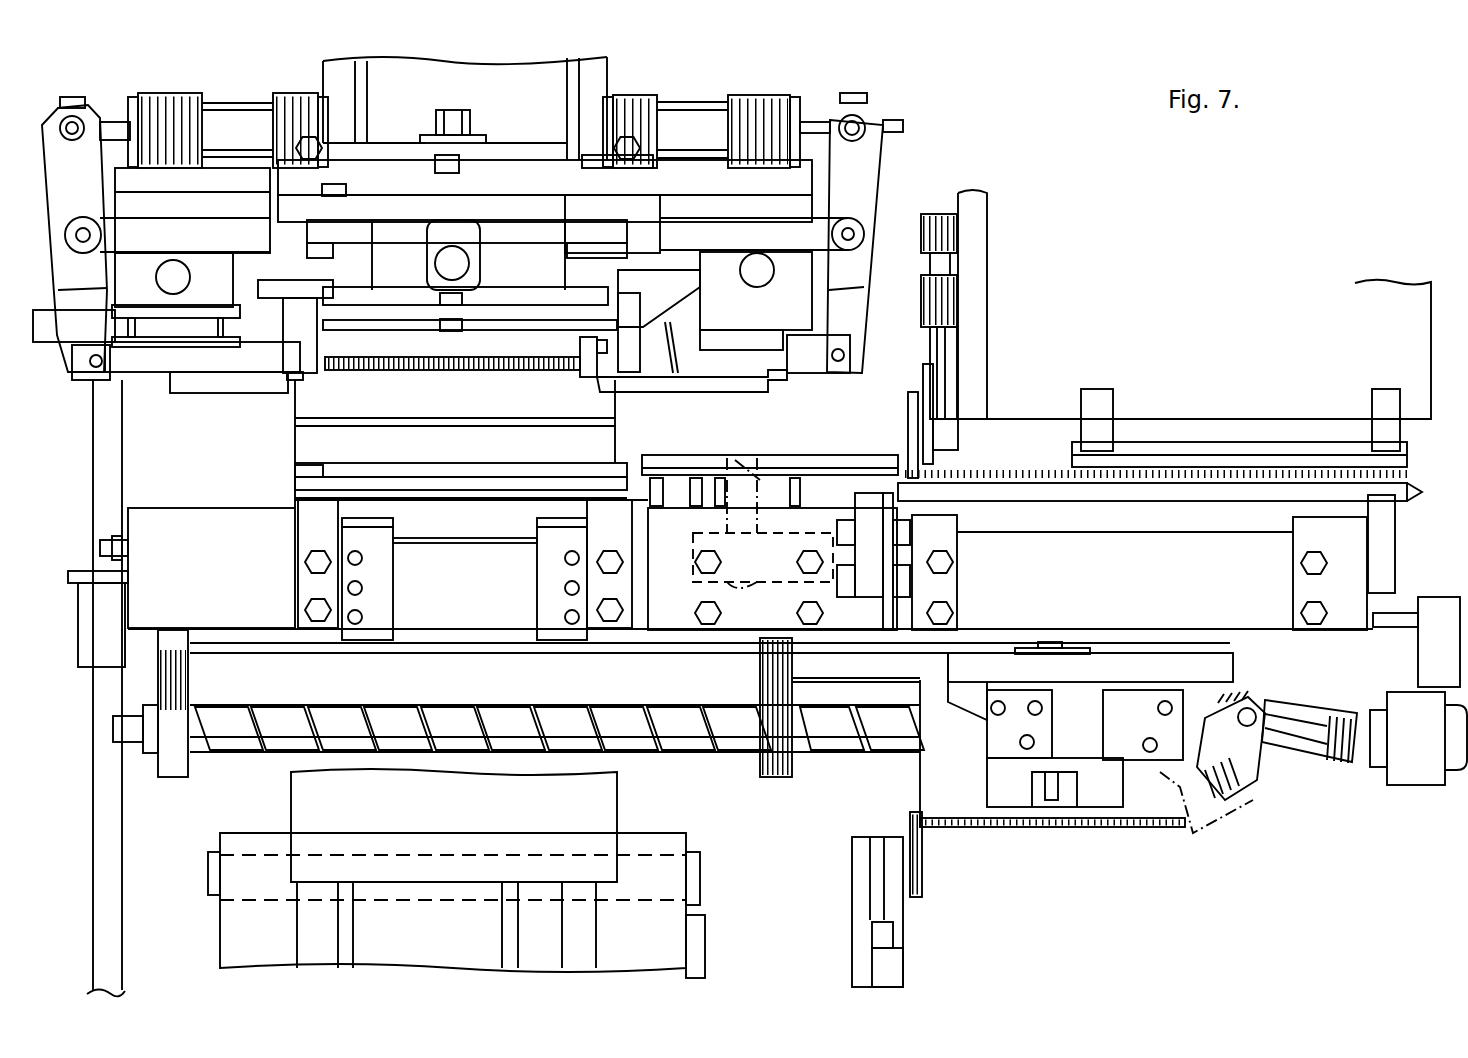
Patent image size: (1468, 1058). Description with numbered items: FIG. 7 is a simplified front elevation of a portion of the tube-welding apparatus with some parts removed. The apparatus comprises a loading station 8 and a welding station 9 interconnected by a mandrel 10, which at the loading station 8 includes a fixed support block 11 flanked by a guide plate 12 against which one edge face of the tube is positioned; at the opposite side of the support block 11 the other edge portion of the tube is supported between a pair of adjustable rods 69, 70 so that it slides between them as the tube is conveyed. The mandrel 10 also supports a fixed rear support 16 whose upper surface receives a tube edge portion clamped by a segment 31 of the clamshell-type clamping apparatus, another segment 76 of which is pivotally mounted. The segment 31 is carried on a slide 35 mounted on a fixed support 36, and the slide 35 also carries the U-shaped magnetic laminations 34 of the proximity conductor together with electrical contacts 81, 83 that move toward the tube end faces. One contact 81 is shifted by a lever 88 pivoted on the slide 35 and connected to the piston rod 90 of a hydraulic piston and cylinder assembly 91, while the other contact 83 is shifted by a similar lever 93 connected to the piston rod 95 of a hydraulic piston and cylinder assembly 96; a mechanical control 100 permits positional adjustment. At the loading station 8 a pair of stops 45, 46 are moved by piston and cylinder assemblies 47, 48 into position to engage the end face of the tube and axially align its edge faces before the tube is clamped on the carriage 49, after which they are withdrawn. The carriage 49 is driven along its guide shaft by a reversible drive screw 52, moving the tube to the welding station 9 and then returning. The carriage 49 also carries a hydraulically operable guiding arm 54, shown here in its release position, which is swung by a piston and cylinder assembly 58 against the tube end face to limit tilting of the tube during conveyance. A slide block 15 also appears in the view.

The loading station 8 is at (1105, 308).
The welding station 9 is at (270, 442).
The mandrel 10 is at (228, 520).
The fixed support block 11 is at (1410, 330).
The guide plate 12 is at (430, 451).
The slide block 15 is at (800, 462).
The first or rear support 16 is at (452, 10).
The segment 31 is at (610, 452).
The laminations 34 is at (487, 368).
The slide 35 is at (512, 152).
The fixed support 36 is at (597, 68).
The stop 45 is at (908, 404).
The stop 46 is at (921, 866).
The piston and cylinder assembly 47 is at (930, 266).
The piston and cylinder assembly 48 is at (897, 962).
The carriage 49 is at (1255, 803).
The reversible drive screw 52 is at (500, 714).
The guiding arm 54 is at (1258, 778).
The piston and cylinder assembly 58 is at (1325, 766).
The rod 69 is at (1265, 452).
The rod 70 is at (1410, 484).
The segment 76 is at (305, 793).
The electrical contact 81 is at (223, 388).
The electrical contact 83 is at (733, 388).
The lever 88 is at (88, 195).
The piston rod 90 is at (115, 124).
The hydraulic piston and cylinder assembly 91 is at (233, 125).
The lever 93 is at (868, 160).
The piston rod 95 is at (812, 123).
The hydraulic piston and cylinder assembly 96 is at (686, 122).
The control 100 is at (470, 265).